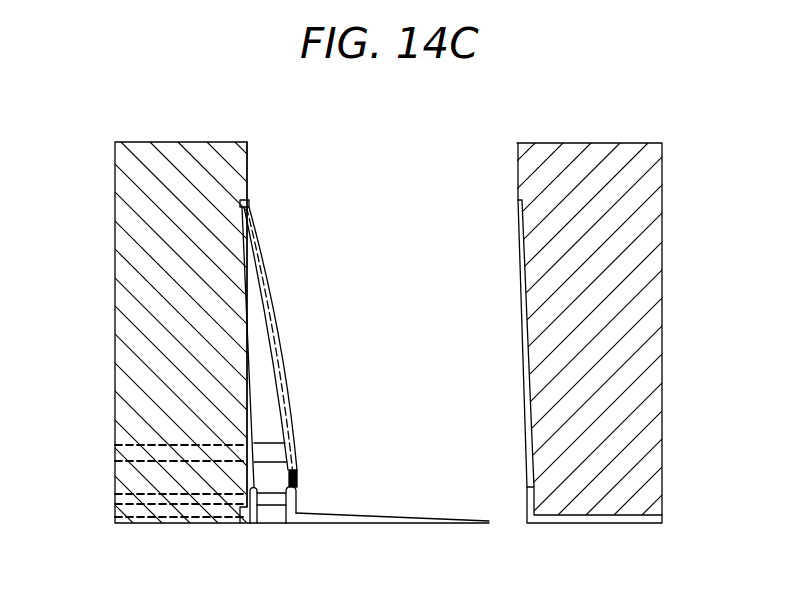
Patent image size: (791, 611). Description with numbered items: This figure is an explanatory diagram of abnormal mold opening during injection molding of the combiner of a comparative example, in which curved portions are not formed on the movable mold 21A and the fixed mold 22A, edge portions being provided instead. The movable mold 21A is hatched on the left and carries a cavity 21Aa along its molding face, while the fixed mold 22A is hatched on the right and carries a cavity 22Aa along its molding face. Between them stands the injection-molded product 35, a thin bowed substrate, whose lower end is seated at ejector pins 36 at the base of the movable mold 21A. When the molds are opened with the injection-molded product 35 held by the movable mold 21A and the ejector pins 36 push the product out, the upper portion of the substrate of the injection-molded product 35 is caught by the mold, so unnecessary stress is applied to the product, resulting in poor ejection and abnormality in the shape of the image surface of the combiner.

The movable mold 21A is at (110, 206).
The cavity of movable mold 21Aa is at (247, 400).
The fixed mold 22A is at (670, 249).
The cavity of fixed mold 22Aa is at (530, 340).
The injection-molded product 35 is at (283, 322).
The ejector pins 36 is at (278, 497).